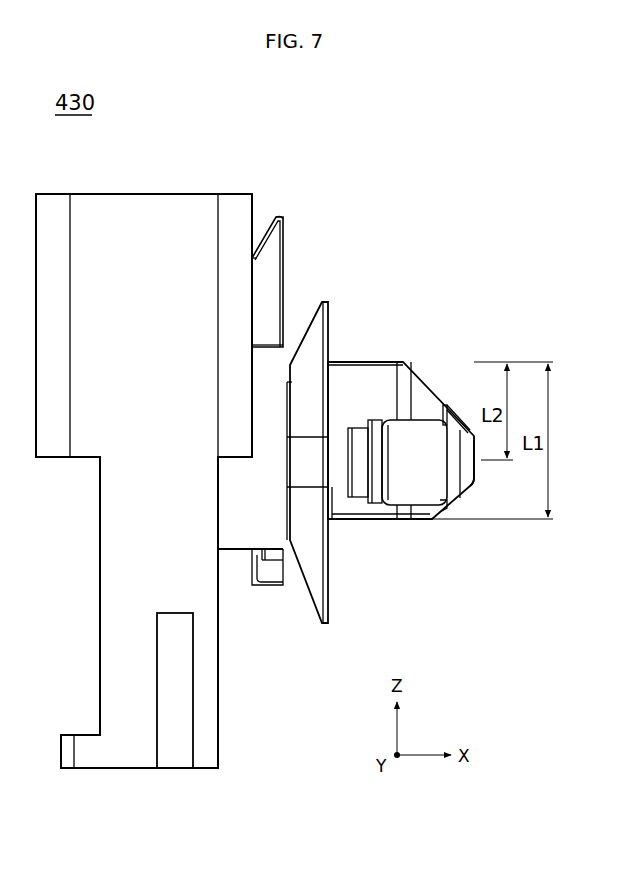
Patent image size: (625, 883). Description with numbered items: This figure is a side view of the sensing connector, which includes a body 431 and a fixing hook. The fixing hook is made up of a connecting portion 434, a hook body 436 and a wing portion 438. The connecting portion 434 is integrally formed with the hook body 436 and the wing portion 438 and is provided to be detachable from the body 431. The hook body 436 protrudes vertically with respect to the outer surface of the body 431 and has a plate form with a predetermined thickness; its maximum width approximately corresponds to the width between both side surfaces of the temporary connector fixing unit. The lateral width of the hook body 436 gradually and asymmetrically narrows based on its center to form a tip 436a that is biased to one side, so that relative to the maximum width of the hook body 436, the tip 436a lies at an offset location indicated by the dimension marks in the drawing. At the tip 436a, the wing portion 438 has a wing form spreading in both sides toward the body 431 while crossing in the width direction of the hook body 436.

The body 431 is at (146, 200).
The connecting portion 434 is at (310, 347).
The hook body 436 is at (370, 376).
The tip 436a is at (466, 476).
The wing portion 438 is at (413, 462).